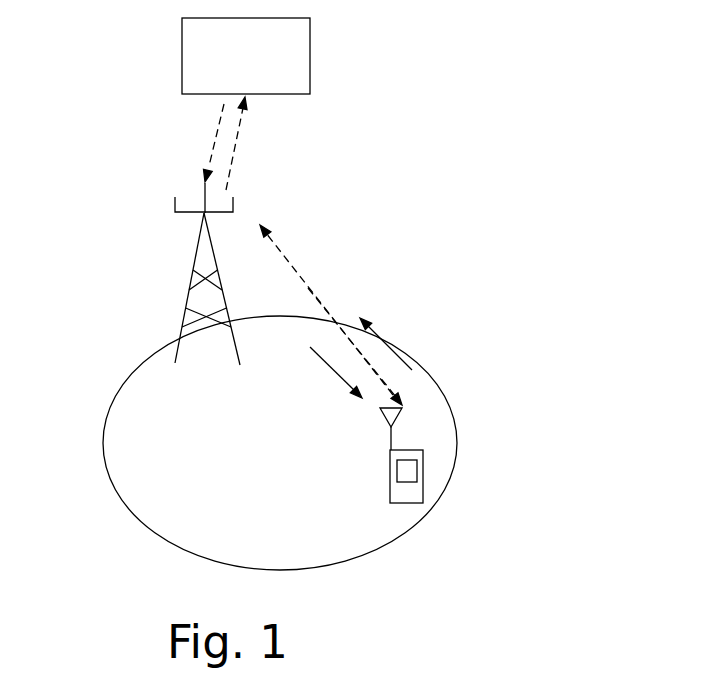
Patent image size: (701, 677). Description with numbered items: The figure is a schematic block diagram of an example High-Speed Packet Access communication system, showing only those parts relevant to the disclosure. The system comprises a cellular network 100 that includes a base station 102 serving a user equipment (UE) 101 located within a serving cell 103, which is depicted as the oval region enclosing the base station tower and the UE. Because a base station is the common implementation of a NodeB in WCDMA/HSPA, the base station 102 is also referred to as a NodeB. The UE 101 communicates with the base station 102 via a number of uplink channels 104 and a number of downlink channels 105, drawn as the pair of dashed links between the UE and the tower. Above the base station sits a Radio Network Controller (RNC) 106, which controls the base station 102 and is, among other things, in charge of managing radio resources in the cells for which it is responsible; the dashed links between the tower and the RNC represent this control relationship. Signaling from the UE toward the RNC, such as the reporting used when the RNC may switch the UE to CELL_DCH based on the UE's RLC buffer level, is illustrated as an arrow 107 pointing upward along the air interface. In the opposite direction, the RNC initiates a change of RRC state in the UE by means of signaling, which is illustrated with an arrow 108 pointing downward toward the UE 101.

The cellular network 100 is at (462, 70).
The user equipment (UE) 101 is at (412, 505).
The base station 102 is at (173, 200).
The serving cell 103 is at (205, 553).
The uplink channels 104 is at (307, 286).
The downlink channels 105 is at (293, 317).
The Radio Network Controller (RNC) 106 is at (310, 48).
The arrow 107 is at (382, 338).
The arrow 108 is at (338, 385).